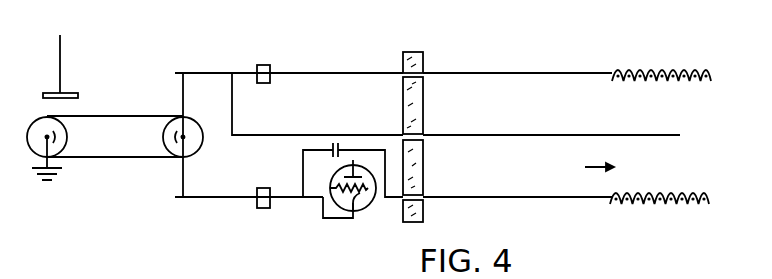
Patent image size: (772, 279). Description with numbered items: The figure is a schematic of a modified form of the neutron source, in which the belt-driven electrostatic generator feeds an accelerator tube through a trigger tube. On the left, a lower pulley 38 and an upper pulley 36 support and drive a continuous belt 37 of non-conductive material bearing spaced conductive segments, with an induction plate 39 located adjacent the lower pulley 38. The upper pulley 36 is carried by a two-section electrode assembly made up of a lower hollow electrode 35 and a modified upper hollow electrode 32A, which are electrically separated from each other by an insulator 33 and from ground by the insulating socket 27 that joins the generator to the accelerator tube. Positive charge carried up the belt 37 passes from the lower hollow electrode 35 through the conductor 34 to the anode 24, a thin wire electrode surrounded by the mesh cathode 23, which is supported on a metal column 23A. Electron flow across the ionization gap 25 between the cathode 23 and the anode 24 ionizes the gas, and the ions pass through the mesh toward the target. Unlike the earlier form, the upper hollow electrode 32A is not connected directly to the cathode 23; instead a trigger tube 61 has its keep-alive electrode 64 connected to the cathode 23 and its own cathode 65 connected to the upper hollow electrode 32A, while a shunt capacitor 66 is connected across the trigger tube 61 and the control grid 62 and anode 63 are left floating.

The cathode 23 is at (702, 177).
The column 23A is at (532, 197).
The anode 24 is at (627, 135).
The ionization gap 25 is at (586, 168).
The insulating socket 27 is at (438, 218).
The upper hollow electrode 32A is at (303, 227).
The insulator 33 is at (260, 221).
The conductor 34 is at (232, 100).
The lower hollow electrode 35 is at (222, 198).
The upper pulley 36 is at (163, 142).
The belt 37 is at (108, 115).
The lower pulley 38 is at (67, 132).
The induction plate 39 is at (68, 92).
The trigger tube 61 is at (364, 171).
The control grid 62 is at (332, 189).
The anode 63 is at (350, 163).
The keep-alive electrode 64 is at (373, 202).
The cathode 65 is at (327, 221).
The shunt capacitor 66 is at (328, 149).